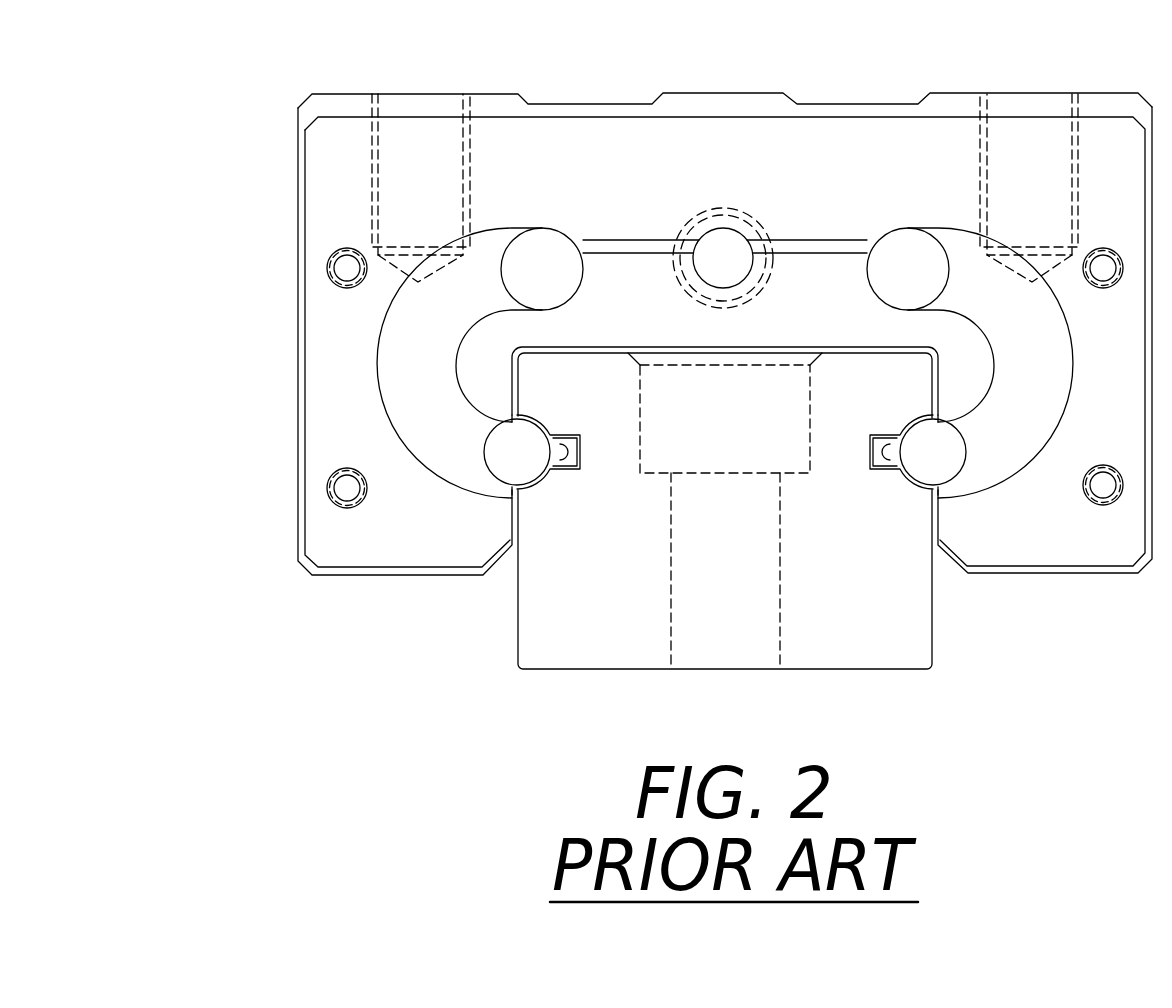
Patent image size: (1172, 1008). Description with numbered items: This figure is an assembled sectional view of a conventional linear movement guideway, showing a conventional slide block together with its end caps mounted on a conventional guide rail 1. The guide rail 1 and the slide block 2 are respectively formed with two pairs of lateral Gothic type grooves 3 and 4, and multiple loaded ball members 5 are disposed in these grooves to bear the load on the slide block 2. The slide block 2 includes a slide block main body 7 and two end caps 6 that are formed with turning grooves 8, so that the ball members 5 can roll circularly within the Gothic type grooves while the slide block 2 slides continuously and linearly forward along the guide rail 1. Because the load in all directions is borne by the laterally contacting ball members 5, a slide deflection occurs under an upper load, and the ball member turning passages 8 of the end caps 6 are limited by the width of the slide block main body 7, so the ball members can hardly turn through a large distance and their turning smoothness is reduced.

The guide rail 1 is at (565, 630).
The slide block 2 is at (283, 305).
The lateral Gothic type groove 3 is at (535, 420).
The lateral Gothic type groove 4 is at (493, 473).
The loaded ball member 5 is at (508, 472).
The end cap 6 is at (337, 177).
The slide block main body 7 is at (327, 107).
The turning groove 8 is at (373, 368).